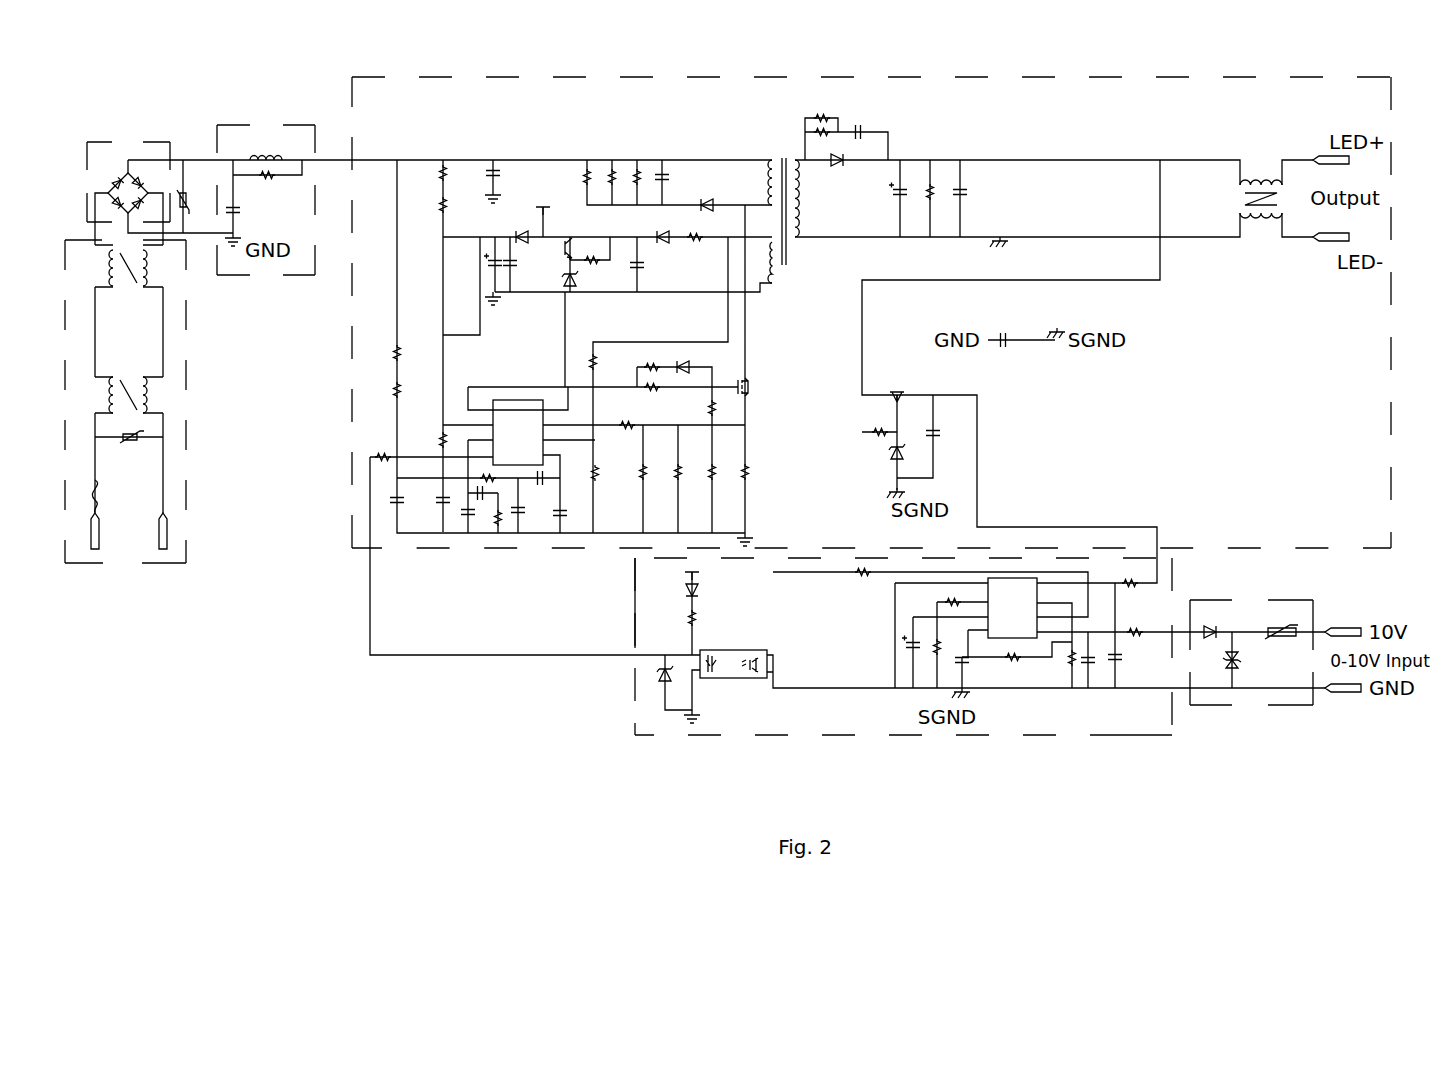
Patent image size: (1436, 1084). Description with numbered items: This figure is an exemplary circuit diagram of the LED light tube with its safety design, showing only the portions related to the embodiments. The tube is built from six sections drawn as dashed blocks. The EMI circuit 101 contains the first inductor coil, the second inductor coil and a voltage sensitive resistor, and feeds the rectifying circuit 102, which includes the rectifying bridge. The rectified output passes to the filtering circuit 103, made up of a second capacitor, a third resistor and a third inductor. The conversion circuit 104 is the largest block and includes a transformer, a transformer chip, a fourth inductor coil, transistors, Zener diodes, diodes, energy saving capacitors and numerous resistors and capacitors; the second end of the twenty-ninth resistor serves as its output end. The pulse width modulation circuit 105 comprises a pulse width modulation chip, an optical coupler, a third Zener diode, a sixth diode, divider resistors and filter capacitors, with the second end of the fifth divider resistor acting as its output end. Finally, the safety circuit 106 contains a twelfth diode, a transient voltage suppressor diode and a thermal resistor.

The EMI circuit 101 is at (186, 563).
The rectifying circuit 102 is at (88, 141).
The filtering circuit 103 is at (217, 125).
The conversion circuit 104 is at (820, 78).
The PWM modulation circuit 105 is at (945, 737).
The safety circuit 106 is at (1240, 707).